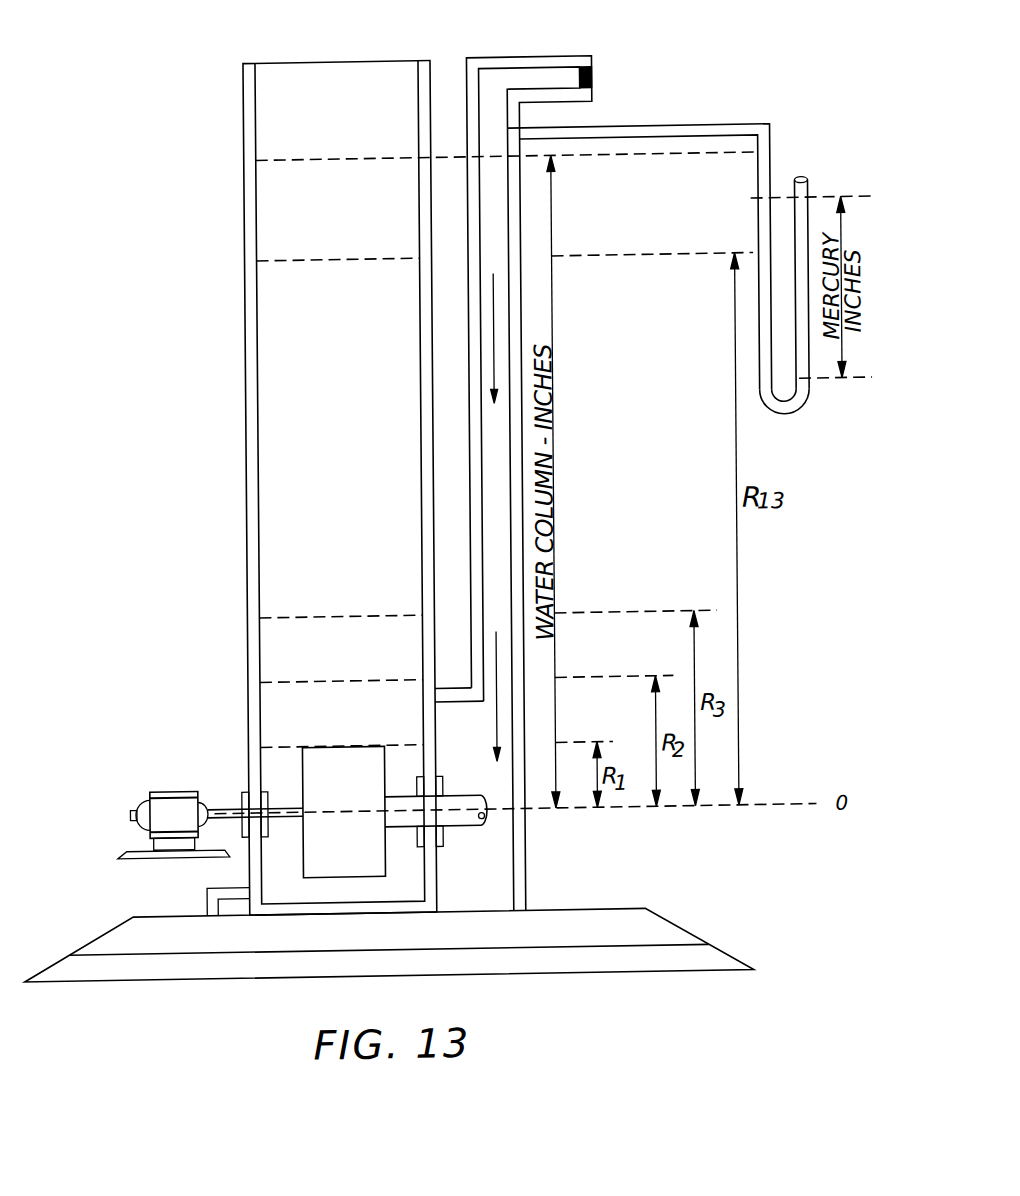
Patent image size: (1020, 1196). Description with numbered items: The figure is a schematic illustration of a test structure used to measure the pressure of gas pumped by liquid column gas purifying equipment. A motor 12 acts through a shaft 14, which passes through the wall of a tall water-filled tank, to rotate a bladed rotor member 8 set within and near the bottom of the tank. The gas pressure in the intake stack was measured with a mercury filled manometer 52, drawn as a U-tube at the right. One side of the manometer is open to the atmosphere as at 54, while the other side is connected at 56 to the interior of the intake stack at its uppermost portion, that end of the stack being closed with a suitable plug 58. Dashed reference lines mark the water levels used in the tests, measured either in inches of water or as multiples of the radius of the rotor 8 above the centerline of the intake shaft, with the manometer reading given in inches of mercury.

The bladed rotor member 8 is at (311, 744).
The motor 12 is at (160, 784).
The shaft 14 is at (214, 803).
The mercury filled manometer 52 is at (794, 405).
The manometer side open to atmosphere 54 is at (800, 185).
The manometer connection to intake stack 56 is at (511, 139).
The plug 58 is at (595, 79).